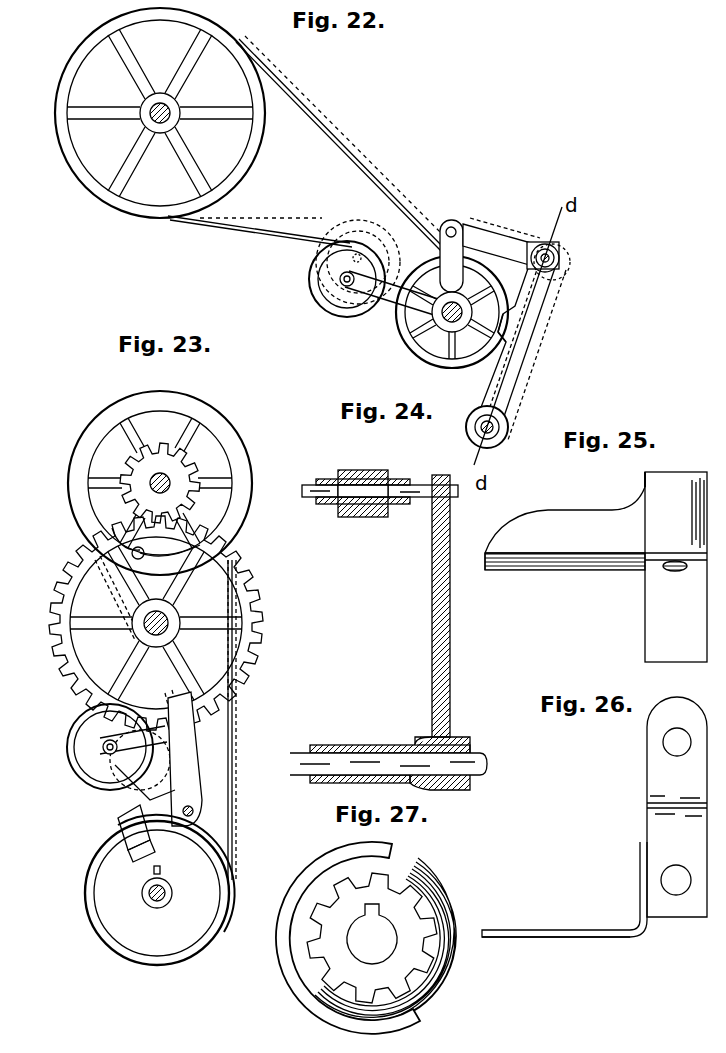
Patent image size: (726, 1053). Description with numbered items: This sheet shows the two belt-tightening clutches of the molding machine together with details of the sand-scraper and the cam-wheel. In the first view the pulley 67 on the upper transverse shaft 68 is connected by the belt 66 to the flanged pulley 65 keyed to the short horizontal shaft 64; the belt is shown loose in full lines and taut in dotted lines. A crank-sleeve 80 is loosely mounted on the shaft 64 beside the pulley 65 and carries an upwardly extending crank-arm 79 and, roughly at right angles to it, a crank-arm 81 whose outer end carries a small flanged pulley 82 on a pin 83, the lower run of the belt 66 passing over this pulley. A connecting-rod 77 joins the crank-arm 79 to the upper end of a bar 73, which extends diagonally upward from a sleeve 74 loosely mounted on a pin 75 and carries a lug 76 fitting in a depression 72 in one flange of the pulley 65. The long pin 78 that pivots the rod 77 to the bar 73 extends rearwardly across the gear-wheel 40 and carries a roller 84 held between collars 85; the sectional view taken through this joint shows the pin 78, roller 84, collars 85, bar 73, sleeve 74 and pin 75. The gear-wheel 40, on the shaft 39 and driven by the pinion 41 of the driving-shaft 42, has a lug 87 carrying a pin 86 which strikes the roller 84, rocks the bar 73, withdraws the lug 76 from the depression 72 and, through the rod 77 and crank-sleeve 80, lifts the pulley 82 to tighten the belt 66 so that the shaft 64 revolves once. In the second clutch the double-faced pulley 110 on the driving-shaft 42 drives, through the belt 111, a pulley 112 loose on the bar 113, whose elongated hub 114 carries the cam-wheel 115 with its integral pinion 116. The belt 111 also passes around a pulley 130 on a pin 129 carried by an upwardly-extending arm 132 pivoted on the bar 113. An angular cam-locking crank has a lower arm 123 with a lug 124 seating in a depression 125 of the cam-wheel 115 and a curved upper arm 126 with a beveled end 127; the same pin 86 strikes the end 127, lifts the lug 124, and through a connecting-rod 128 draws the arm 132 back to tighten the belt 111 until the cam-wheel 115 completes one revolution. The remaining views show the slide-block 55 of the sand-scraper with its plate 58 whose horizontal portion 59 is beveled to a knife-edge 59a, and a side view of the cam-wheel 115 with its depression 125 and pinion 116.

In FIG. 22, the belt 66 is at (323, 130).
In FIG. 22, the pulley 67 is at (247, 152).
In FIG. 22, the upper transverse shaft 68 is at (168, 117).
In FIG. 22, the connecting-rod 77 is at (497, 238).
In FIG. 22, the collars 85 is at (543, 248).
In FIG. 24, the collars 85 is at (397, 505).
In FIG. 22, the roller 84 is at (558, 257).
In FIG. 24, the roller 84 is at (362, 493).
In FIG. 22, the long pin 78 is at (568, 268).
In FIG. 24, the long pin 78 is at (367, 503).
In FIG. 22, the crank-arm 79 is at (447, 262).
In FIG. 22, the crank-sleeve 80 is at (463, 306).
In FIG. 22, the pin 83 is at (340, 277).
In FIG. 22, the small flanged pulley 82 is at (312, 288).
In FIG. 22, the crank-arm 81 is at (350, 317).
In FIG. 22, the short transversely-extending horizontal shaft 64 is at (430, 314).
In FIG. 22, the flanged pulley 65 is at (448, 363).
In FIG. 22, the peripheral depression or notch 72 is at (508, 330).
In FIG. 22, the bar 73 is at (517, 333).
In FIG. 24, the bar 73 is at (436, 638).
In FIG. 22, the lug or lateral extension 76 is at (500, 333).
In FIG. 22, the pin 75 is at (472, 428).
In FIG. 24, the pin 75 is at (490, 767).
In FIG. 22, the sleeve 74 is at (497, 438).
In FIG. 24, the sleeve 74 is at (380, 748).
In FIG. 23, the double-faced pulley 110 is at (210, 422).
In FIG. 23, the pinion 41 is at (160, 483).
In FIG. 23, the horizontal driving-shaft 42 is at (170, 490).
In FIG. 23, the lug 87 is at (135, 540).
In FIG. 23, the pin 86 is at (127, 542).
In FIG. 23, the gear-wheel 40 is at (240, 585).
In FIG. 23, the horizontally-extending shaft 39 is at (167, 618).
In FIG. 23, the beveled upper end 127 is at (168, 705).
In FIG. 23, the pulley 130 is at (82, 722).
In FIG. 23, the belt 111 is at (234, 728).
In FIG. 23, the connecting-rod 128 is at (103, 750).
In FIG. 23, the upper arm 126 is at (193, 748).
In FIG. 23, the pin 129 is at (112, 760).
In FIG. 23, the upwardly-extending arm 132 is at (115, 800).
In FIG. 23, the depression 125 is at (200, 838).
In FIG. 27, the depression 125 is at (402, 863).
In FIG. 23, the pulley 112 is at (85, 897).
In FIG. 23, the downwardly-extending lug 124 is at (143, 842).
In FIG. 23, the lower arm 123 is at (132, 860).
In FIG. 23, the elongated hub 114 is at (166, 888).
In FIG. 23, the cam-wheel 115 is at (151, 920).
In FIG. 27, the cam-wheel 115 is at (418, 884).
In FIG. 23, the horizontal shaft or bar 113 is at (165, 898).
In FIG. 25, the horizontal portion 59 is at (557, 530).
In FIG. 26, the horizontal portion 59 is at (578, 928).
In FIG. 25, the plate 58 is at (643, 520).
In FIG. 26, the plate 58 is at (643, 873).
In FIG. 25, the knife-edge 59a is at (530, 566).
In FIG. 26, the knife-edge 59a is at (538, 938).
In FIG. 25, the slide-block 55 is at (670, 618).
In FIG. 26, the slide-block 55 is at (663, 770).
In FIG. 27, the pinion 116 is at (407, 947).